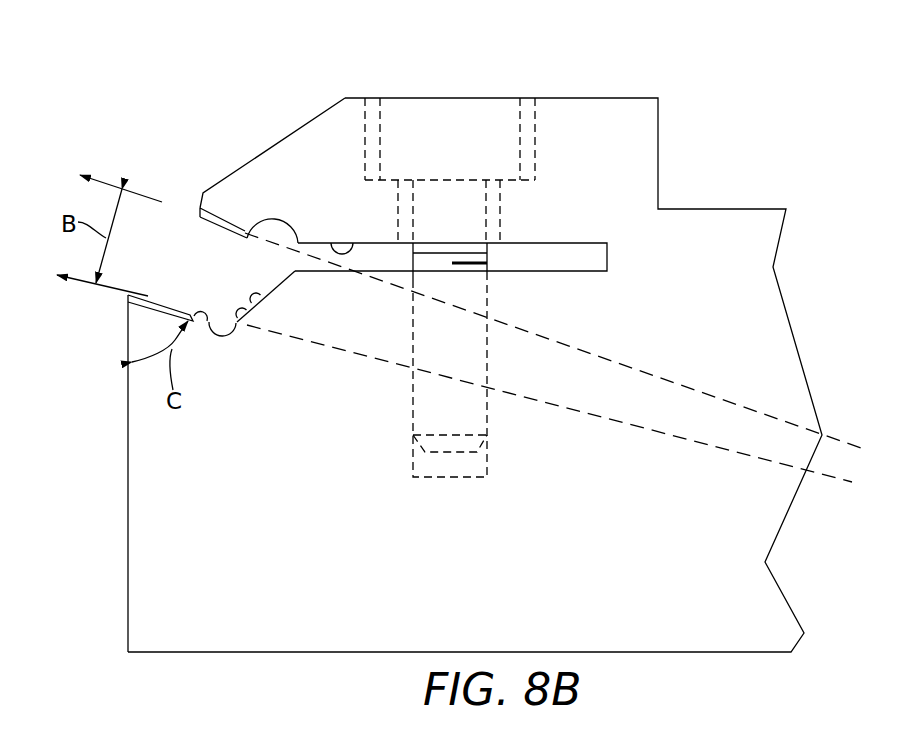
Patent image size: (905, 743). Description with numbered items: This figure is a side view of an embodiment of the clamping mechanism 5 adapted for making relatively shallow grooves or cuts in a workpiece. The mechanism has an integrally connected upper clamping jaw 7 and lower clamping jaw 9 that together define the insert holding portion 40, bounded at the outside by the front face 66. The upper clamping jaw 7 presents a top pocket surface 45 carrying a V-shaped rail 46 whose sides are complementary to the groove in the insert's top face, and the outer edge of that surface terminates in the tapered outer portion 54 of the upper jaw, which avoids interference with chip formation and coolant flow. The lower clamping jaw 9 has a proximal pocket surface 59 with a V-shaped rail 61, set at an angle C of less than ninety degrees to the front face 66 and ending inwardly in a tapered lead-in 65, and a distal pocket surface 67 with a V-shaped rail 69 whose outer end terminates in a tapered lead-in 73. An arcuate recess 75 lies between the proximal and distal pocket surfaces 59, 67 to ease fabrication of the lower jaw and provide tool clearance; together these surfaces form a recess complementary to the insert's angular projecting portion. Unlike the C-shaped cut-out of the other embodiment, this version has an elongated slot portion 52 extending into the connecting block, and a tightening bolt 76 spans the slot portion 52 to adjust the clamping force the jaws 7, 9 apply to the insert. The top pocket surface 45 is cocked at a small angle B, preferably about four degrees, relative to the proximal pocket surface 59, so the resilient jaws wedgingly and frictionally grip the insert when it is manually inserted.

The clamping mechanism 5 is at (208, 98).
The upper clamping jaw 7 is at (237, 203).
The lower clamping jaw 9 is at (160, 313).
The insert holding portion 40 is at (195, 262).
The top pocket surface 45 is at (205, 223).
The V-shaped rail 46 is at (224, 228).
The elongated slot portion 52 is at (347, 243).
The outer portion of the upper jaw 54 is at (203, 204).
The proximal pocket surface 59 is at (146, 289).
The V-shaped rail 61 is at (156, 302).
The tapered lead-in 65 is at (209, 326).
The front face 66 is at (128, 450).
The distal pocket surface 67 is at (263, 286).
The V-shaped rail 69 is at (262, 298).
The tapered lead-in 73 is at (247, 325).
The arcuate recess 75 is at (237, 327).
The tightening bolt 76 is at (435, 143).